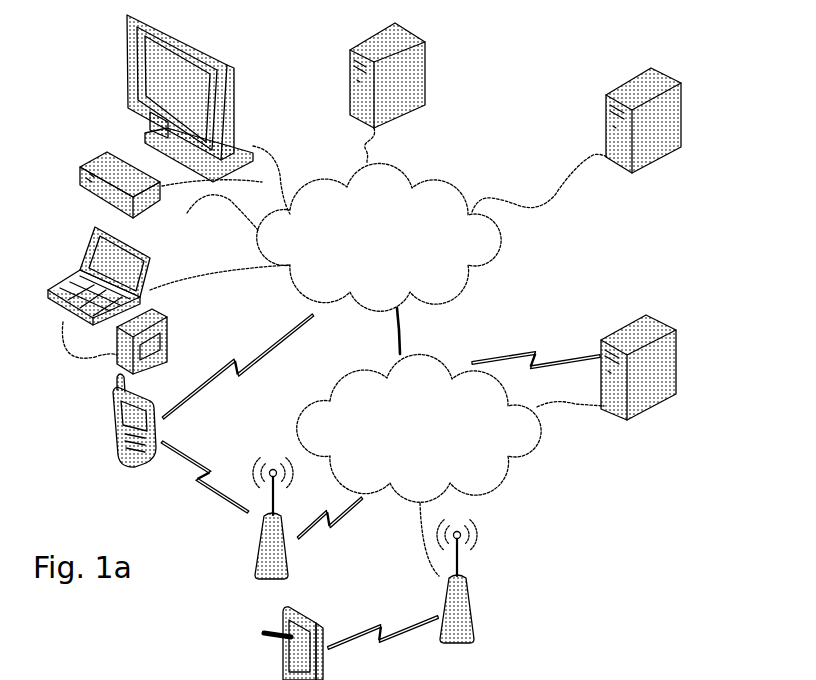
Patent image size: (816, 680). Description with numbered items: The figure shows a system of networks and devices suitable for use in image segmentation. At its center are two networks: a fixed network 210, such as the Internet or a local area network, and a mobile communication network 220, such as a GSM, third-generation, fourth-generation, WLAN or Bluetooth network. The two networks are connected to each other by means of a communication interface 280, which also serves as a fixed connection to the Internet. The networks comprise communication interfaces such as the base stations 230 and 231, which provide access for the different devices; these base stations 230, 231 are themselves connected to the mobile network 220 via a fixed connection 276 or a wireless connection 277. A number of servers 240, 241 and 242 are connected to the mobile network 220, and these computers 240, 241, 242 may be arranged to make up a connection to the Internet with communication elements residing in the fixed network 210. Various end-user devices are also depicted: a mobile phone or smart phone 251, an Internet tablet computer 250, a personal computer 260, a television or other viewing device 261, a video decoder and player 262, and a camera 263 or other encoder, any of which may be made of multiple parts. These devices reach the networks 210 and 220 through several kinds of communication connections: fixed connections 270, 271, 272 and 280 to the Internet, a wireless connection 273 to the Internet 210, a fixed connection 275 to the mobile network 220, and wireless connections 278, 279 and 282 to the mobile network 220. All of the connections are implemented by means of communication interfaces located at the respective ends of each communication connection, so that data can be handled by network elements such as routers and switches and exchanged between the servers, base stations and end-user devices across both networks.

The fixed network 210 is at (480, 272).
The mobile communication network 220 is at (495, 487).
The base station 230 is at (253, 571).
The base station 231 is at (472, 596).
The server 240 is at (432, 52).
The server 241 is at (687, 100).
The server 242 is at (684, 349).
The Internet tablet computer 250 is at (272, 673).
The mobile phone 251 is at (110, 427).
The personal computer 260 is at (82, 252).
The television 261 is at (115, 78).
The video decoder and player 262 is at (88, 153).
The camera 263 is at (172, 313).
The fixed connection 270 is at (224, 266).
The fixed connection 271 is at (359, 153).
The fixed connection 272 is at (543, 192).
The wireless connection 273 is at (230, 365).
The fixed connection 275 is at (571, 406).
The fixed connection 276 is at (418, 572).
The wireless connection 277 is at (325, 538).
The wireless connection 278 is at (382, 650).
The wireless connection 279 is at (205, 460).
The communication interface 280 is at (404, 342).
The wireless connection 282 is at (512, 357).